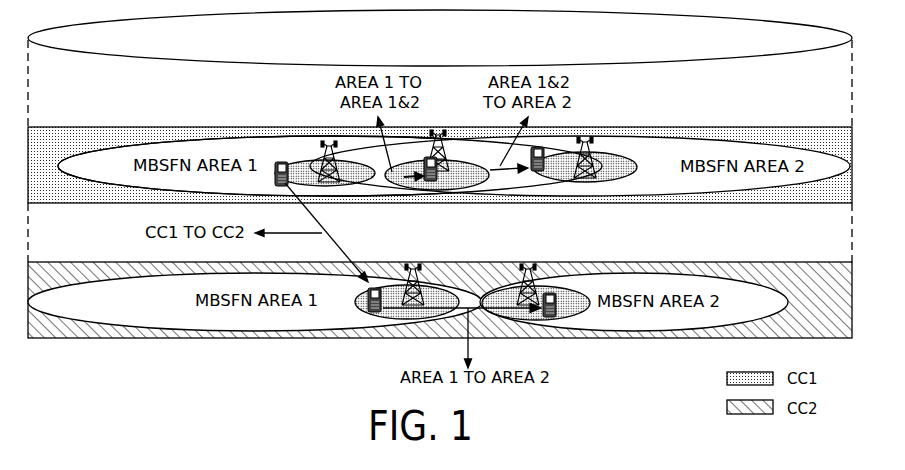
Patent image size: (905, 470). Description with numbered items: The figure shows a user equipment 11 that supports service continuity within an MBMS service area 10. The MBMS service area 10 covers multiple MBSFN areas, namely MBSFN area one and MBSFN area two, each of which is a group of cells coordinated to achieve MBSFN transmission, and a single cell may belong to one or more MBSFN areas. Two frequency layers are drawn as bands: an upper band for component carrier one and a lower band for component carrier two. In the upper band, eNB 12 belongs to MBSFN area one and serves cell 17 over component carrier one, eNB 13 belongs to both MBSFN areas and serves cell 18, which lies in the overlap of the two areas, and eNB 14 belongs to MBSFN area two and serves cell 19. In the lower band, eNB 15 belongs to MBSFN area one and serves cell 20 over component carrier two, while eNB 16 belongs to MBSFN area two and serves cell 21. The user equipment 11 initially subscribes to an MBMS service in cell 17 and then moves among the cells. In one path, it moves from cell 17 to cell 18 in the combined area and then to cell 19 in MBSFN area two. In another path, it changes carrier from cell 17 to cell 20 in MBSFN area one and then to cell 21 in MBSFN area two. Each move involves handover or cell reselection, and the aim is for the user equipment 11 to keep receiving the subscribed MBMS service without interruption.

The MBMS service area 10 is at (684, 48).
The user equipment 11 is at (282, 162).
The eNB 12 is at (331, 143).
The eNB 13 is at (438, 133).
The eNB 14 is at (586, 140).
The eNB 15 is at (413, 266).
The eNB 16 is at (528, 266).
The cell 17 is at (367, 180).
The cell 18 is at (473, 188).
The cell 19 is at (623, 176).
The cell 20 is at (448, 308).
The cell 21 is at (577, 310).